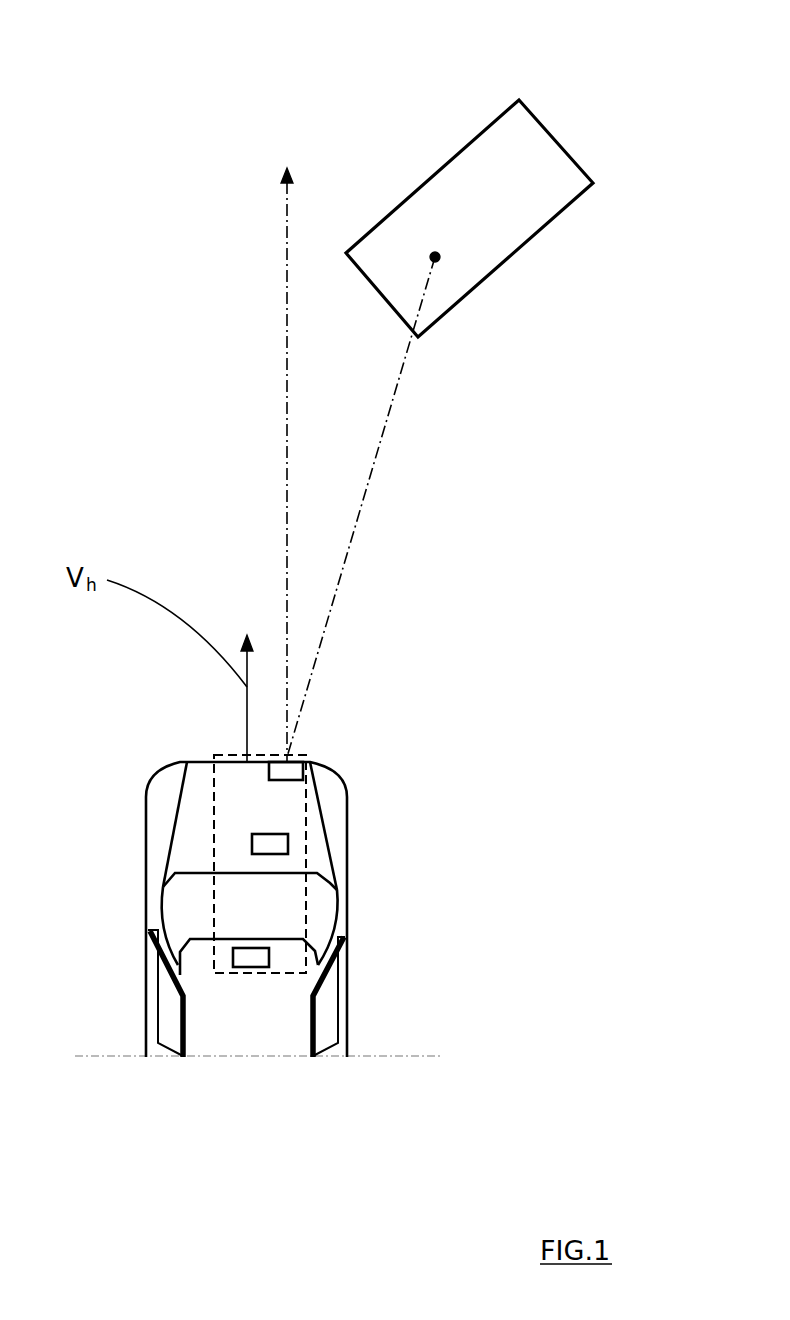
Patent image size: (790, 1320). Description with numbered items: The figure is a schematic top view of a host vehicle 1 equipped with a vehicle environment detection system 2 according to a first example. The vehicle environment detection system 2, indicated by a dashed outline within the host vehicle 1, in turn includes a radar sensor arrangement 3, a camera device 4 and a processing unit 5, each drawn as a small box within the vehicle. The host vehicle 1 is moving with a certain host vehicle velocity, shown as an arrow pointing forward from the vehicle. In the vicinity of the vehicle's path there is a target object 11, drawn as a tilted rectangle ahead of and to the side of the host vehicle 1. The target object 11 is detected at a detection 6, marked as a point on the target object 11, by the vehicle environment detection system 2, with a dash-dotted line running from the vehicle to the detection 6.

The host vehicle 1 is at (223, 1017).
The vehicle environment detection system 2 is at (307, 917).
The radar sensor arrangement 3 is at (297, 768).
The camera device 4 is at (260, 956).
The processing unit 5 is at (280, 845).
The detection 6 is at (435, 252).
The target object 11 is at (473, 160).